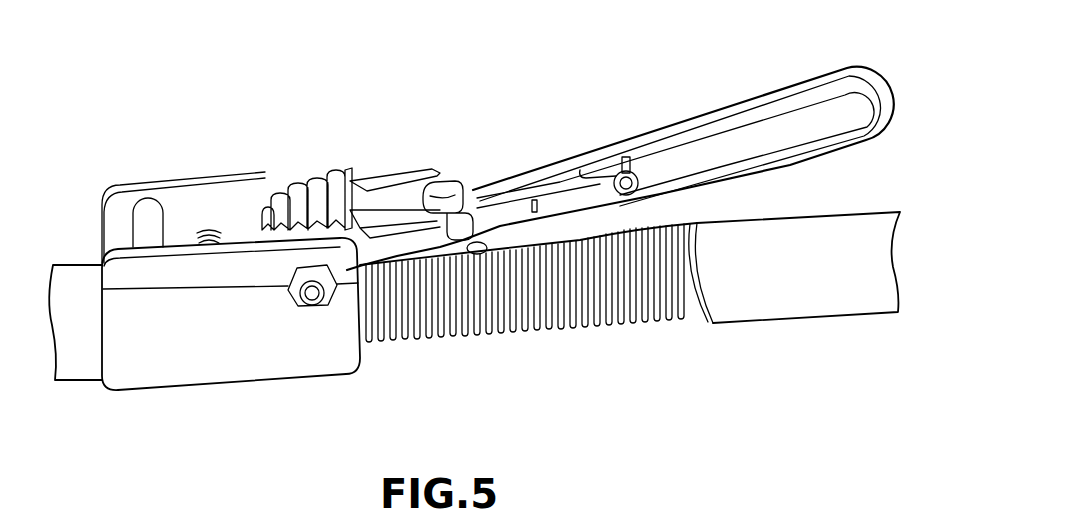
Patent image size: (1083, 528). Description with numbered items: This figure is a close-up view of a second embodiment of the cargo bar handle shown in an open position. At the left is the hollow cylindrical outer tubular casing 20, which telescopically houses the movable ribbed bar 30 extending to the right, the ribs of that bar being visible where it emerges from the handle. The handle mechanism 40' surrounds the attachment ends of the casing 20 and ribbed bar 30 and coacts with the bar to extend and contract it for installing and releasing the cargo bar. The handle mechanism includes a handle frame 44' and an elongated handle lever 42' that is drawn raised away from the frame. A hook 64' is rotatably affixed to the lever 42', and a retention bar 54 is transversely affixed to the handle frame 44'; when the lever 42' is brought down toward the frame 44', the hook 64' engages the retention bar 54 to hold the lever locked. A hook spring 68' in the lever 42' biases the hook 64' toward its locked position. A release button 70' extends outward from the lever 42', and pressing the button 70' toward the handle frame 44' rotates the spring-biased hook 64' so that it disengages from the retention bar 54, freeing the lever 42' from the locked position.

The outer tubular casing 20 is at (75, 375).
The movable ribbed bar 30 is at (798, 308).
The handle mechanism 40' is at (231, 340).
The handle frame 44' is at (230, 349).
The retention bar 54 is at (149, 210).
The hook 64' is at (454, 171).
The hook spring 68' is at (609, 126).
The handle lever 42' is at (620, 144).
The release button 70' is at (536, 316).